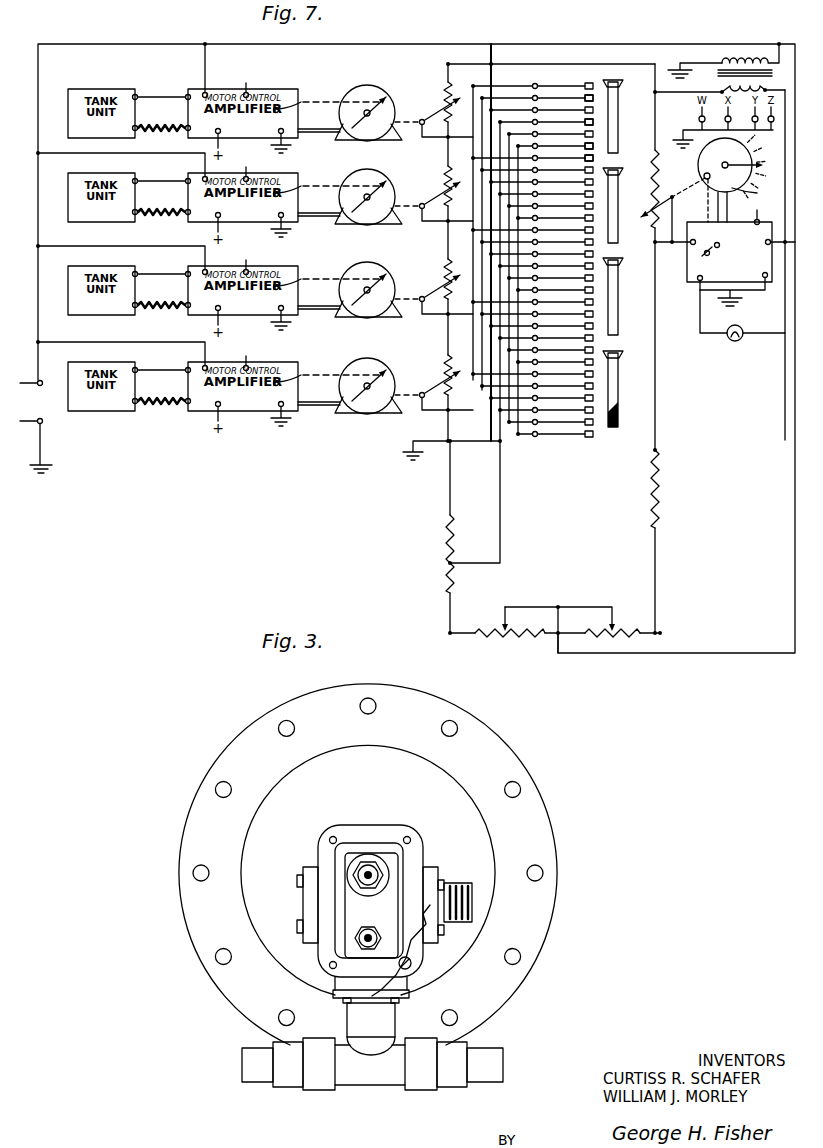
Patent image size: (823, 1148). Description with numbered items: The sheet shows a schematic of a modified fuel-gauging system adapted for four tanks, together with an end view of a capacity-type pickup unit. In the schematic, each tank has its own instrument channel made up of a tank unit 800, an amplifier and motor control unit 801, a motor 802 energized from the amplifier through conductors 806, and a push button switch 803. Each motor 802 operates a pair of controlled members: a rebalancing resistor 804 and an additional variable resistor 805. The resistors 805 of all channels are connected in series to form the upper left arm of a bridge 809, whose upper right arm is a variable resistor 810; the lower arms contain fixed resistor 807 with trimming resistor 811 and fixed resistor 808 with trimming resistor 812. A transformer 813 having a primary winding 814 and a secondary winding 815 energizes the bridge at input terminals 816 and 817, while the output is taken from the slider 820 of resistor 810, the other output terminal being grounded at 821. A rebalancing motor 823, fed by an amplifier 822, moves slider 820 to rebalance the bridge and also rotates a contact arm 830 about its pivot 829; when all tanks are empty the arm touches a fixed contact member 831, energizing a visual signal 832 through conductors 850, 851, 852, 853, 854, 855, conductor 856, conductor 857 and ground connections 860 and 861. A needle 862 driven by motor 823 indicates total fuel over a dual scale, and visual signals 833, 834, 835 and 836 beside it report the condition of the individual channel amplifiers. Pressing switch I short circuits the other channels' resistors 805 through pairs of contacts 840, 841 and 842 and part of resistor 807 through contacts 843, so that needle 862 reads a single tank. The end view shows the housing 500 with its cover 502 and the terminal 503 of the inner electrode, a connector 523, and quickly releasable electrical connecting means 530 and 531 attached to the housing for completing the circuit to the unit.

In FIG. 7, the tank unit 800 is at (117, 239).
In FIG. 7, the amplifier and motor control unit 801 is at (283, 248).
In FIG. 7, the motor 802 is at (379, 241).
In FIG. 7, the push button switch 803 is at (619, 109).
In FIG. 7, the rebalancing resistor 804 is at (319, 259).
In FIG. 7, the variable resistor 805 is at (439, 252).
In FIG. 7, the conductors 806 is at (367, 279).
In FIG. 7, the fixed resistor 807 is at (448, 566).
In FIG. 7, the fixed resistor 808 is at (654, 503).
In FIG. 7, the bridge 809 is at (551, 261).
In FIG. 7, the variable resistor 810 is at (686, 196).
In FIG. 7, the trimming resistor 811 is at (499, 638).
In FIG. 7, the trimming resistor 812 is at (628, 630).
In FIG. 7, the transformer 813 is at (718, 80).
In FIG. 7, the primary winding 814 is at (740, 60).
In FIG. 7, the secondary winding 815 is at (773, 62).
In FIG. 7, the bridge input terminal 816 is at (657, 93).
In FIG. 7, the bridge input terminal 817 is at (557, 638).
In FIG. 7, the slider 820 is at (644, 222).
In FIG. 7, the ground connection 821 is at (450, 443).
In FIG. 7, the amplifier 822 is at (696, 221).
In FIG. 7, the rebalancing motor 823 is at (683, 149).
In FIG. 7, the pivot 829 is at (710, 251).
In FIG. 7, the contact arm 830 is at (702, 256).
In FIG. 7, the fixed contact member 831 is at (696, 284).
In FIG. 7, the visual signal 832 is at (731, 340).
In FIG. 7, the visual signal 833 is at (700, 116).
In FIG. 7, the visual signal 834 is at (727, 116).
In FIG. 7, the visual signal 835 is at (754, 116).
In FIG. 7, the visual signal 836 is at (742, 175).
In FIG. 7, the first pair of contacts 840 is at (580, 93).
In FIG. 7, the second pair of contacts 841 is at (580, 115).
In FIG. 7, the third pair of contacts 842 is at (580, 139).
In FIG. 7, the pair of contacts 843 is at (580, 159).
In FIG. 7, the conductor 850 is at (38, 347).
In FIG. 7, the conductor 851 is at (38, 290).
In FIG. 7, the conductor 852 is at (38, 202).
In FIG. 7, the conductor 853 is at (38, 112).
In FIG. 7, the conductor 854 is at (371, 43).
In FIG. 7, the conductor 855 is at (786, 43).
In FIG. 7, the conductor 856 is at (699, 317).
In FIG. 7, the conductor 857 is at (716, 262).
In FIG. 7, the ground connection 860 is at (738, 301).
In FIG. 7, the ground connection 861 is at (42, 432).
In FIG. 7, the needle 862 is at (754, 196).
In FIG. 3, the housing 500 is at (503, 776).
In FIG. 3, the cover 502 is at (412, 961).
In FIG. 3, the terminal 503 is at (371, 871).
In FIG. 3, the connector 523 is at (368, 933).
In FIG. 3, the quickly releasable electrical connecting means 530 is at (326, 1088).
In FIG. 3, the quickly releasable electrical connecting means 531 is at (460, 881).